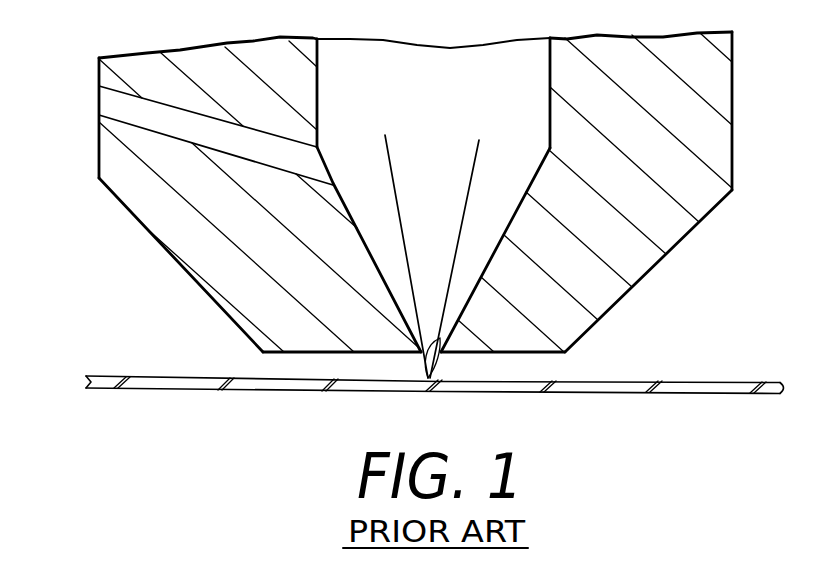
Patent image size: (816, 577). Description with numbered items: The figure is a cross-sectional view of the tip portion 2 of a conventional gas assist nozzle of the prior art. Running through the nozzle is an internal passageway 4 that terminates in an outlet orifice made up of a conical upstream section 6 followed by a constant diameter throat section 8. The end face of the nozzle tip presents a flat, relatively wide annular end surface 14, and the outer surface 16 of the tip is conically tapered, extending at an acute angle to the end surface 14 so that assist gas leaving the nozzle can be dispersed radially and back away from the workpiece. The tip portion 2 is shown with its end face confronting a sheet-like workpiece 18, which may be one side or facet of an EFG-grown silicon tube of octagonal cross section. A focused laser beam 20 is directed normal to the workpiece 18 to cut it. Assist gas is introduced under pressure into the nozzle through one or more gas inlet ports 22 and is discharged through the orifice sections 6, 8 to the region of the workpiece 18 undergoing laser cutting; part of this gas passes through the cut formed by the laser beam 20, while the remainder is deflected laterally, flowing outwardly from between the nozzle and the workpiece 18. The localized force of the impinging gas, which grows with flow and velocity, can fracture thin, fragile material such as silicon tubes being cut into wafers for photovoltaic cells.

The tip portion 2 is at (377, 221).
The internal passageway 4 is at (548, 60).
The conical upstream section 6 is at (532, 196).
The constant diameter throat section 8 is at (437, 382).
The annular end surface 14 is at (368, 352).
The outer surface 16 is at (647, 278).
The sheet-like workpiece 18 is at (259, 391).
The focused laser beam 20 is at (387, 158).
The gas inlet ports 22 is at (113, 103).